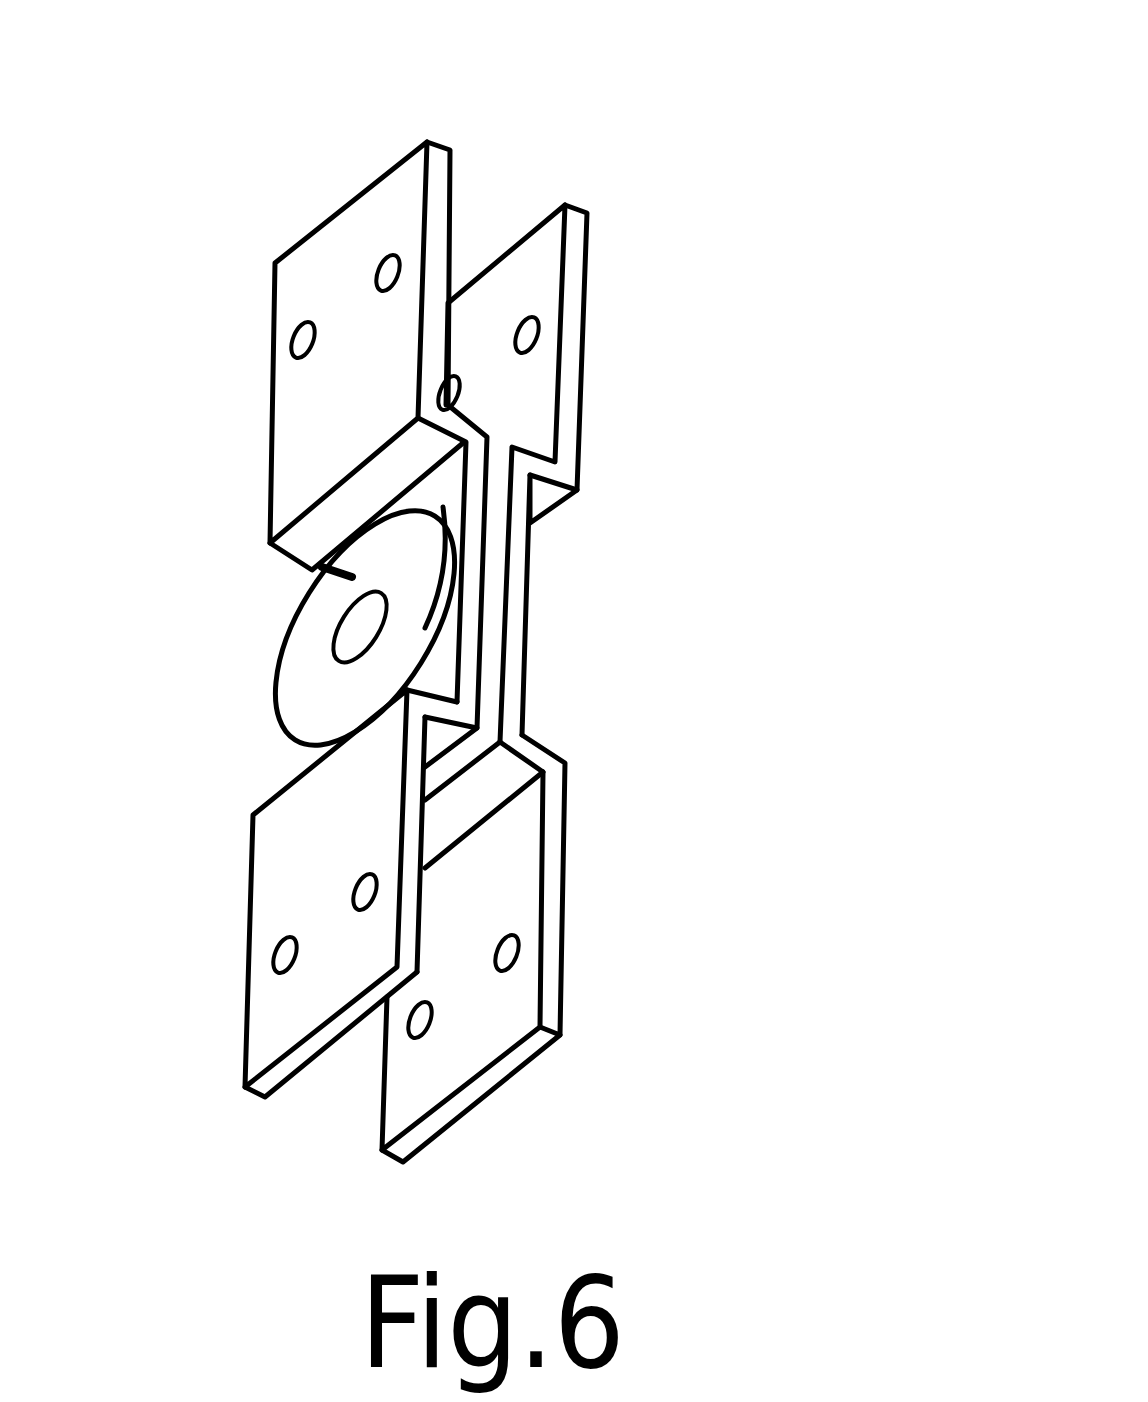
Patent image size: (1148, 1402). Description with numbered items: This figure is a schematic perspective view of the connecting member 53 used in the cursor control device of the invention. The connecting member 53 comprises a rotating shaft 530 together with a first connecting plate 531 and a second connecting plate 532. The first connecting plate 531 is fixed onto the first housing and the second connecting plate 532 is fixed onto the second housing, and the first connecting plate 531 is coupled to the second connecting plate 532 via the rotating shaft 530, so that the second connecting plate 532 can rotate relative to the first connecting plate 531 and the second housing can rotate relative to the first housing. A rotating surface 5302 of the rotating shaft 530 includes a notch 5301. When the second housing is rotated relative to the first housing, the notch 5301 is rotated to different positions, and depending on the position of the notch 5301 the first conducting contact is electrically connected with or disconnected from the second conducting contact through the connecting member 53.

The connecting member 53 is at (747, 140).
The rotating shaft 530 is at (315, 695).
The notch 5301 is at (360, 553).
The rotating surface 5302 is at (411, 620).
The first connecting plate 531 is at (285, 897).
The second connecting plate 532 is at (512, 887).